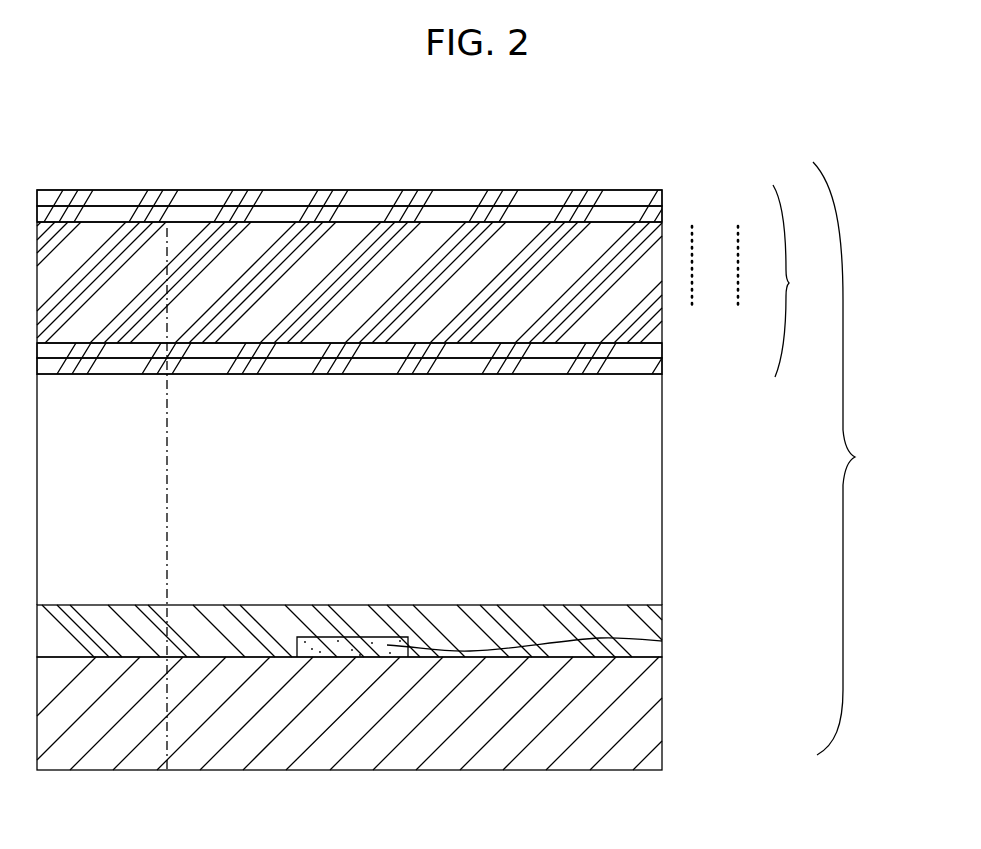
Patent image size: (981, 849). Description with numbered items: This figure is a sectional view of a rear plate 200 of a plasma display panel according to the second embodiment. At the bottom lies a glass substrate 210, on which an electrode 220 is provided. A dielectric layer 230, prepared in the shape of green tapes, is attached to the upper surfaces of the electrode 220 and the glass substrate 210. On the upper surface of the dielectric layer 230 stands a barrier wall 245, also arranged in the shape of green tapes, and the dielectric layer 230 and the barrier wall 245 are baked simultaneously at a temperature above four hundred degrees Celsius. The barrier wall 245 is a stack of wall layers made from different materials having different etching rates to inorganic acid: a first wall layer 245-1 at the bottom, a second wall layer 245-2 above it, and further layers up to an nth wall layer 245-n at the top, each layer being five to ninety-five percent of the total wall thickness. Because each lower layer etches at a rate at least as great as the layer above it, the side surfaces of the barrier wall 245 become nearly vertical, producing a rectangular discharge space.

The rear plate 200 is at (859, 458).
The barrier wall 245 is at (439, 281).
The nth wall layer 245-n is at (662, 192).
The second wall layer 245-2 is at (662, 327).
The first wall layer 245-1 is at (662, 374).
The dielectric layer 230 is at (662, 611).
The electrode 220 is at (662, 641).
The glass substrate 210 is at (662, 723).